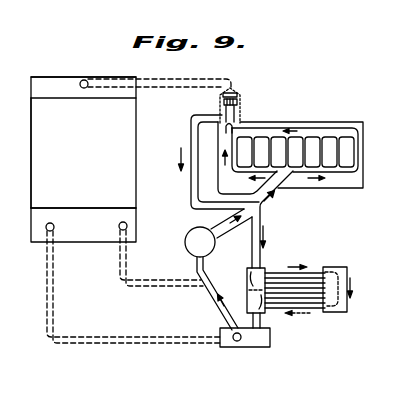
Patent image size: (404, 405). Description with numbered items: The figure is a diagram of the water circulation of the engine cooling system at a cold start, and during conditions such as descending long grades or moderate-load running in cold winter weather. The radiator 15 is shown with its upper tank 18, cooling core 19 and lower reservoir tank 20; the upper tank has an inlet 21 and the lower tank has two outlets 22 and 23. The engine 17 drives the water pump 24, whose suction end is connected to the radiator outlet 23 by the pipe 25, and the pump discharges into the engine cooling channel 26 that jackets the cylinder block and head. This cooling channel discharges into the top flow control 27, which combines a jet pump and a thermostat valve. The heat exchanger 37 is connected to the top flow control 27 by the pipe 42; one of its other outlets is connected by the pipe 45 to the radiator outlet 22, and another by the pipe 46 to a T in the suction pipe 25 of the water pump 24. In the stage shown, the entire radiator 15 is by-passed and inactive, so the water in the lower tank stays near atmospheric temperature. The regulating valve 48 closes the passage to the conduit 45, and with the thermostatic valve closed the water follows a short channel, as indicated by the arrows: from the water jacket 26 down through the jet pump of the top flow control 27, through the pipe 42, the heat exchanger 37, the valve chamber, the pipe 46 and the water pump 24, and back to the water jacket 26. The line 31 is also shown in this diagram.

The radiator 15 is at (88, 137).
The engine 17 is at (355, 187).
The upper tank 18 is at (47, 82).
The cooling core 19 is at (33, 167).
The lower reservoir tank 20 is at (87, 228).
The inlet 21 is at (84, 80).
The outlet 22 is at (51, 223).
The outlet 23 is at (123, 222).
The water pump 24 is at (218, 233).
The pipe 25 is at (166, 280).
The engine cooling channel 26 is at (306, 175).
The top flow control 27 is at (241, 101).
The control line 31 is at (148, 88).
The heat exchanger 37 is at (324, 312).
The pipe 42 is at (190, 132).
The pipe 45 is at (118, 343).
The pipe 46 is at (215, 306).
The regulating valve 48 is at (248, 347).